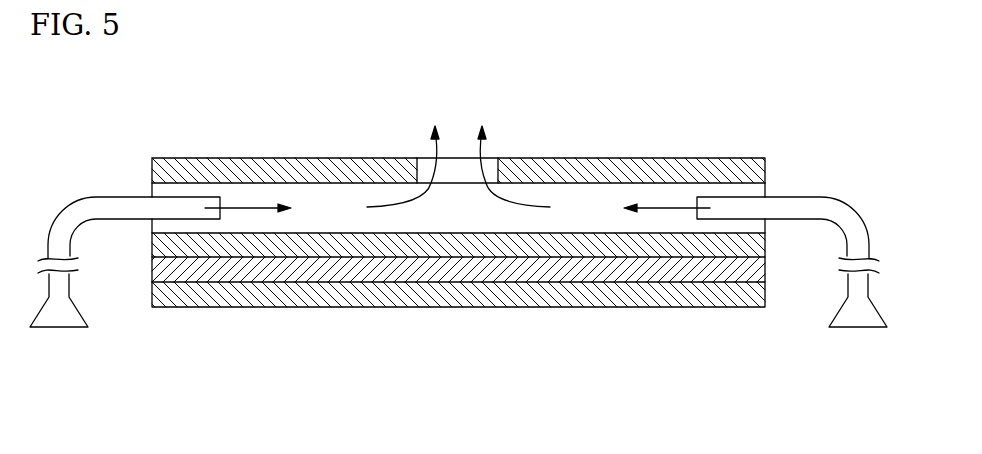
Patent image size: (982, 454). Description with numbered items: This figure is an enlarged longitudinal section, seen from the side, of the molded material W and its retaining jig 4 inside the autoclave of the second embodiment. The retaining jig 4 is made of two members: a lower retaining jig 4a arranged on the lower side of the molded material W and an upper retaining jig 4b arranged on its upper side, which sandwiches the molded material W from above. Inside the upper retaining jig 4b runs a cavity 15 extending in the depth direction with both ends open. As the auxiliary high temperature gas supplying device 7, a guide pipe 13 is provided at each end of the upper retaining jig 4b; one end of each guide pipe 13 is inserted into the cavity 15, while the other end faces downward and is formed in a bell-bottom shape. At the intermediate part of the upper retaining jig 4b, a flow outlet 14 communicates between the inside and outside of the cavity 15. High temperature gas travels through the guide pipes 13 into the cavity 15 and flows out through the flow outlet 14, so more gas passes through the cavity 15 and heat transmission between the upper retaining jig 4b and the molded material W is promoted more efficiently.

The retaining jig 4 is at (568, 392).
The lower retaining jig 4a is at (593, 292).
The upper retaining jig 4b is at (492, 250).
The auxiliary high temperature gas supplying device 7 is at (249, 208).
The guide pipe 13 is at (122, 202).
The flow outlet 14 is at (457, 162).
The cavity 15 is at (322, 203).
The molded material W is at (465, 272).